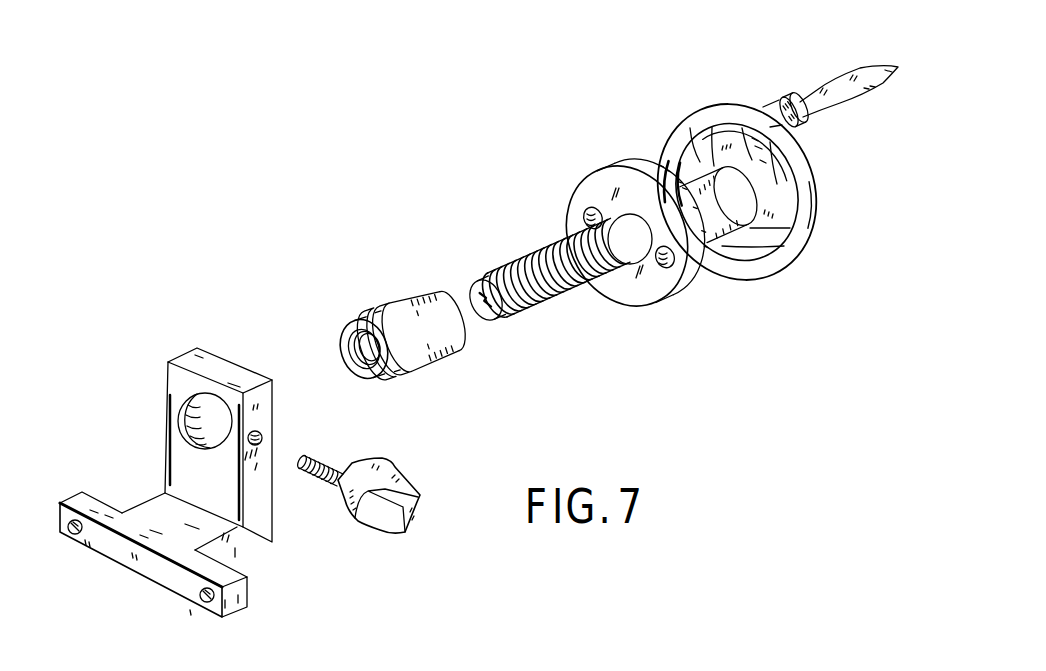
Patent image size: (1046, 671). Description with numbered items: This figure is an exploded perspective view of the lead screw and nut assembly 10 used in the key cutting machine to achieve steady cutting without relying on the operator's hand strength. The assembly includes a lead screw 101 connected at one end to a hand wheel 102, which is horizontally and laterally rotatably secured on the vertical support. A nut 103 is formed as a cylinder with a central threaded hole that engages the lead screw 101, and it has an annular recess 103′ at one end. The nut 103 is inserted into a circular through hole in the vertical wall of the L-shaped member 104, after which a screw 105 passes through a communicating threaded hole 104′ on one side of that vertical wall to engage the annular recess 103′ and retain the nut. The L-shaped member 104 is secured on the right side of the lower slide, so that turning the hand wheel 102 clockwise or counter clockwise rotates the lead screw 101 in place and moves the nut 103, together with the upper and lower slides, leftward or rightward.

The lead screw and nut assembly 10 is at (457, 293).
The lead screw 101 is at (487, 323).
The hand wheel 102 is at (859, 64).
The nut 103 is at (346, 376).
The annular recess 103′ is at (416, 372).
The L-shaped member 104 is at (128, 570).
The threaded hole 104′ is at (263, 438).
The screw 105 is at (420, 528).